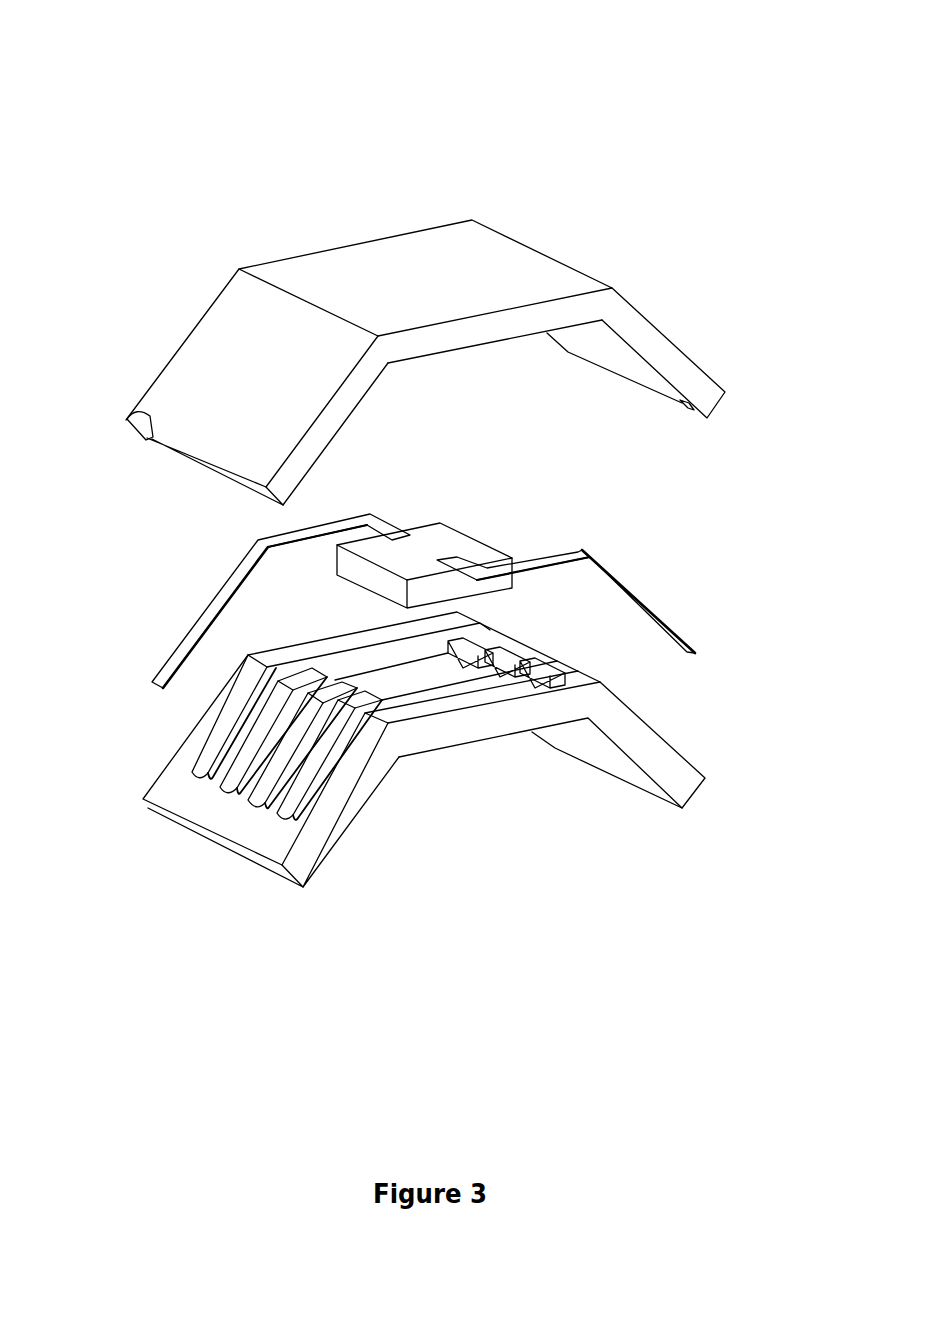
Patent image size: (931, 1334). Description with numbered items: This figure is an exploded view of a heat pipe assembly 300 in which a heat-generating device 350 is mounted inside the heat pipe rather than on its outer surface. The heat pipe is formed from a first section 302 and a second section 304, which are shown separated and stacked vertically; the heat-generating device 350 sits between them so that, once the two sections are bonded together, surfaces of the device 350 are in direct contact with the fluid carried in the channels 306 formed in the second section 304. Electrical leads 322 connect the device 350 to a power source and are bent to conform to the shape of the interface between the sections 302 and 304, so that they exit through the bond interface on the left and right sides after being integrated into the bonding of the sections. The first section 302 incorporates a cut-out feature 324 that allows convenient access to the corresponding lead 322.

The sensor assembly 300 is at (156, 119).
The first section 302 is at (493, 247).
The second section 304 is at (683, 765).
The channels 306 is at (237, 770).
The spring contacts 322 is at (195, 623).
The cut-out feature 324 is at (128, 430).
The heat-generating device 350 is at (470, 537).